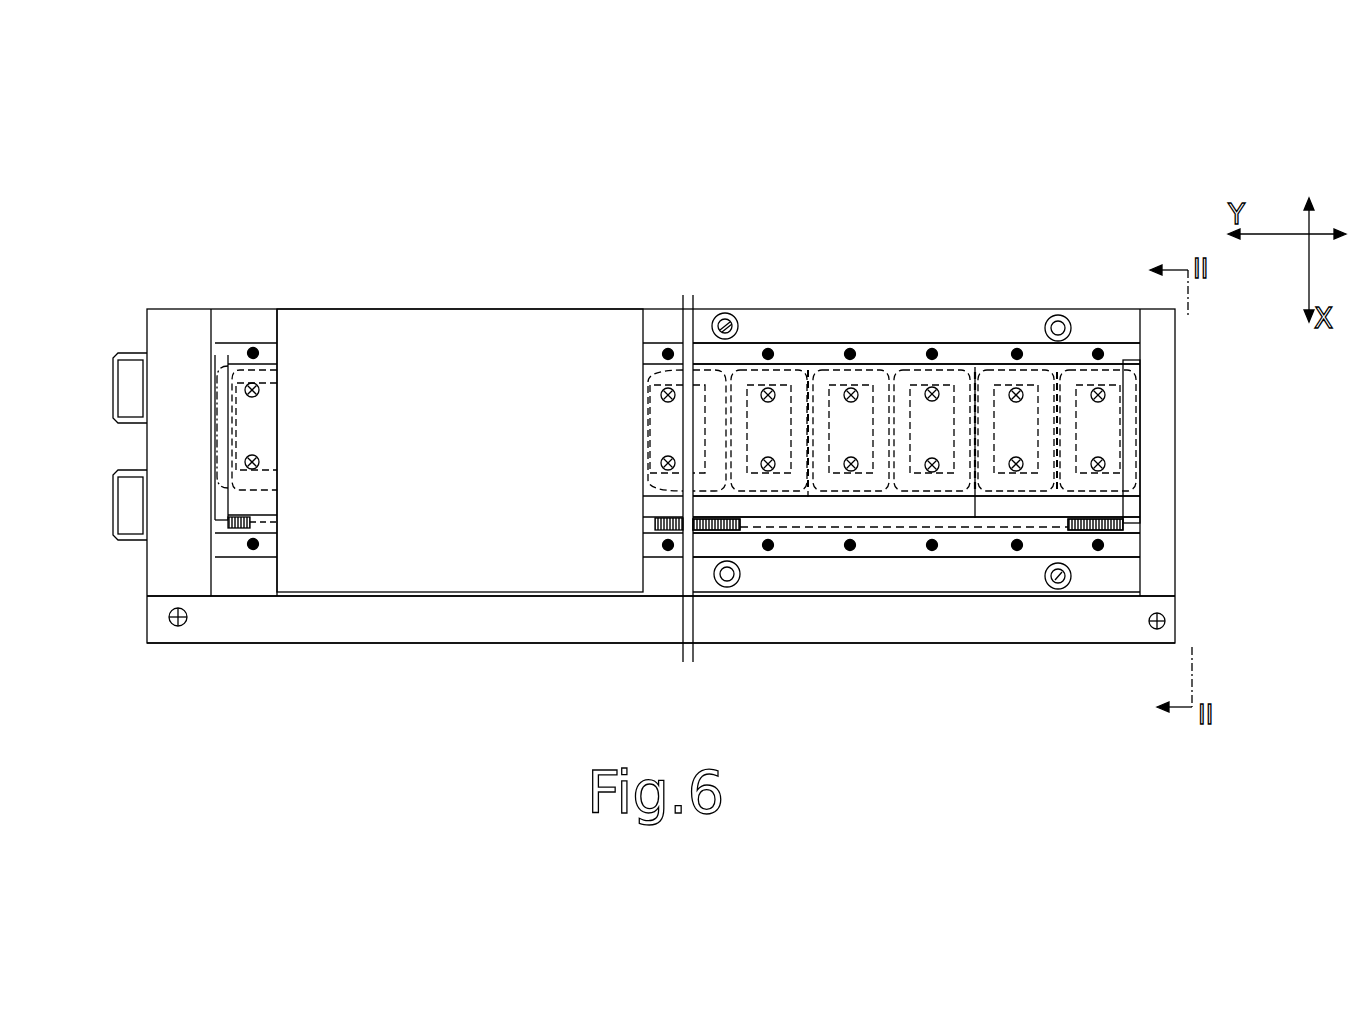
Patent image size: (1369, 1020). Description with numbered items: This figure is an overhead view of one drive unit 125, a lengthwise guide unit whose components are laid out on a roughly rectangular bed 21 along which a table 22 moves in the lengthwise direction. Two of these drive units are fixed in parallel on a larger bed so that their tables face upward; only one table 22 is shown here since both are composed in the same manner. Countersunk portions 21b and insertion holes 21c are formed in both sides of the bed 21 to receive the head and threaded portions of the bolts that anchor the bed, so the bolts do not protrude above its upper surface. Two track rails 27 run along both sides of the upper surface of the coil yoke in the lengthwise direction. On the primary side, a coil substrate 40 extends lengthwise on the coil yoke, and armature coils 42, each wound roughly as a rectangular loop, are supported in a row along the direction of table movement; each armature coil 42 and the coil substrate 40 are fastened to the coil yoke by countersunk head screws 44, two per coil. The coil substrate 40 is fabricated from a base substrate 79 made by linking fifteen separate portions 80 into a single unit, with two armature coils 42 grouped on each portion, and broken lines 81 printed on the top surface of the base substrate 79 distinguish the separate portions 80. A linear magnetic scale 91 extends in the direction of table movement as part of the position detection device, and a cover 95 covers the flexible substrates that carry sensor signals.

The drive unit 125 is at (1190, 180).
The bed 21 is at (243, 576).
The countersunk portions 21b is at (722, 313).
The insertion holes 21c is at (737, 313).
The table 22 is at (468, 331).
The track rails 27 is at (800, 358).
The coil substrate 40 is at (1003, 522).
The armature coils 42 is at (232, 362).
The countersunk head screws 44 is at (260, 390).
The base substrate 79 is at (919, 522).
The separate portions 80 is at (1040, 508).
The broken lines 81 is at (808, 497).
The linear magnetic scale 91 is at (880, 534).
The cover 95 is at (480, 623).